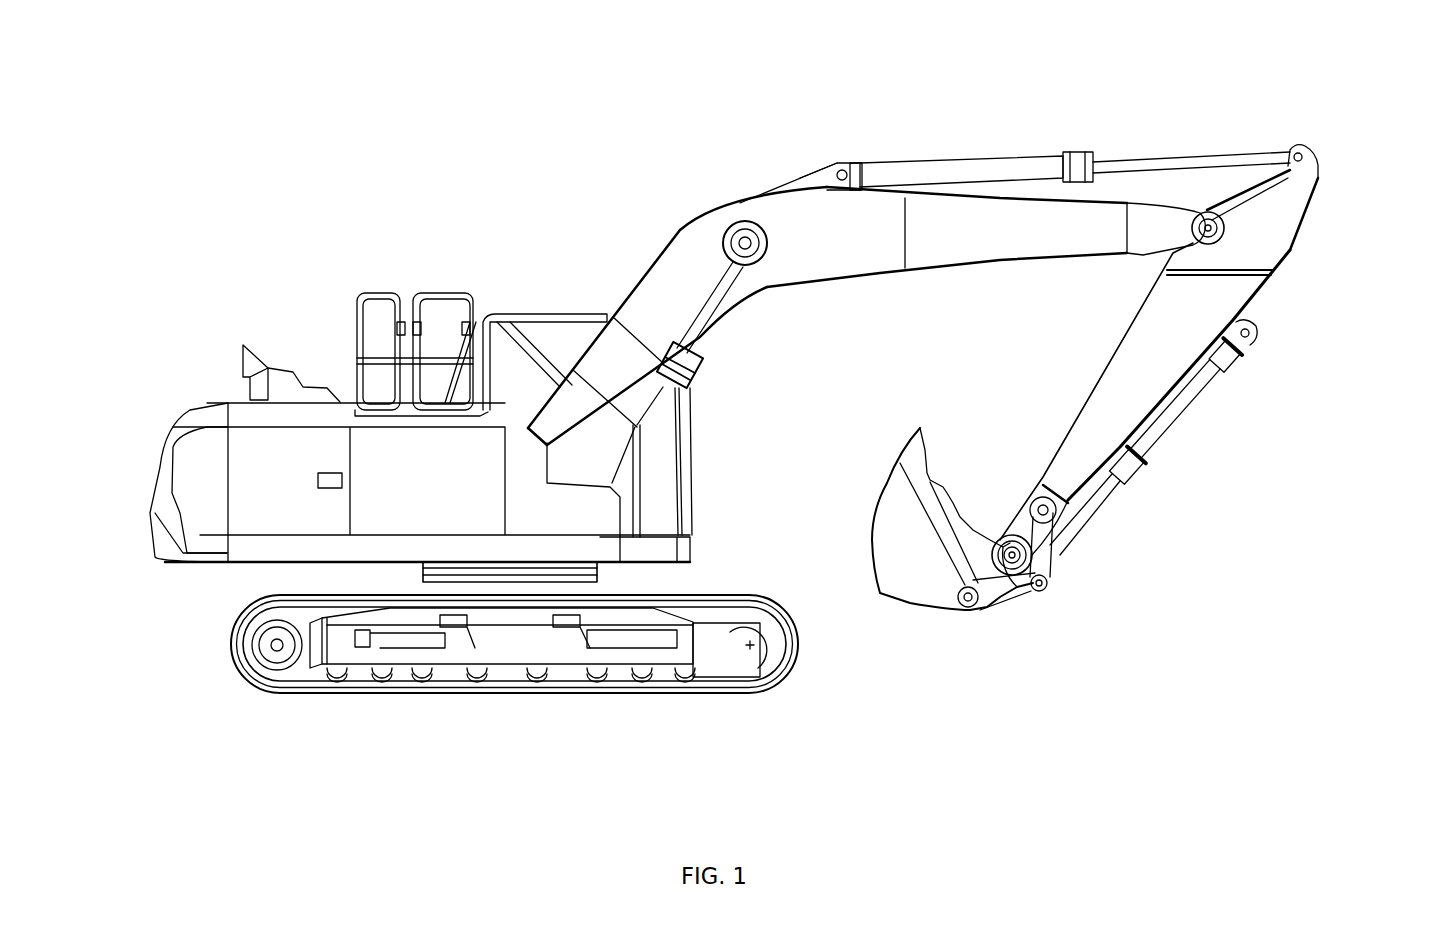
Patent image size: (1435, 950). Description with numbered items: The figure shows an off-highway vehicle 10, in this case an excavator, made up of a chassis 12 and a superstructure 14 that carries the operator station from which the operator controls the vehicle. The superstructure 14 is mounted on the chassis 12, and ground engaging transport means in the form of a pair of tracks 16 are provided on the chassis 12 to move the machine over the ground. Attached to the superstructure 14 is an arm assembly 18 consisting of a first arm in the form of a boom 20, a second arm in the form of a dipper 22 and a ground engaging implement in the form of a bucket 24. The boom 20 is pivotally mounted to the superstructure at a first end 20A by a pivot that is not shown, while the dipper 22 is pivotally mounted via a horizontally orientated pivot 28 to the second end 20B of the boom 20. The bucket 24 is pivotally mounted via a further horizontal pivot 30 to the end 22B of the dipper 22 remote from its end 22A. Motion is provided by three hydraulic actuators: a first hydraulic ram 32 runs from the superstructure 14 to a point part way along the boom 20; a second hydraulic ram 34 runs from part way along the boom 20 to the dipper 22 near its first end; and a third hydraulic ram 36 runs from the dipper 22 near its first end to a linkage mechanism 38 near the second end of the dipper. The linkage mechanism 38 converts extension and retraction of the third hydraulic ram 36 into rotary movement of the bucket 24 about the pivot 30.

The off-highway vehicle 10 is at (389, 185).
The chassis 12 is at (366, 655).
The superstructure 14 is at (207, 407).
The tracks 16 is at (773, 683).
The arm assembly 18 is at (794, 157).
The boom 20 is at (860, 257).
The first end of the boom 20A is at (570, 410).
The second end of the boom 20B is at (1157, 220).
The dipper 22 is at (1215, 303).
The first end of the dipper 22A is at (1283, 200).
The second end of the dipper 22B is at (1067, 505).
The bucket 24 is at (905, 565).
The pivot 28 is at (1208, 227).
The pivot 30 is at (1013, 562).
The first hydraulic ram 32 is at (663, 397).
The second hydraulic ram 34 is at (982, 168).
The third hydraulic ram 36 is at (1203, 385).
The linkage mechanism 38 is at (1000, 592).